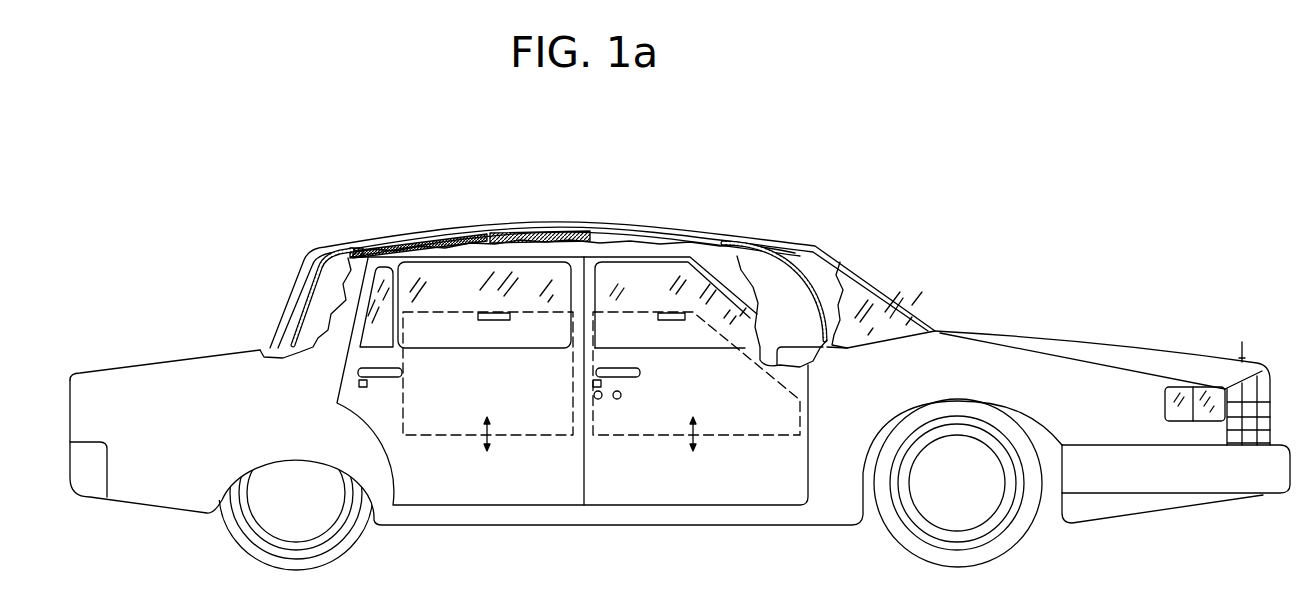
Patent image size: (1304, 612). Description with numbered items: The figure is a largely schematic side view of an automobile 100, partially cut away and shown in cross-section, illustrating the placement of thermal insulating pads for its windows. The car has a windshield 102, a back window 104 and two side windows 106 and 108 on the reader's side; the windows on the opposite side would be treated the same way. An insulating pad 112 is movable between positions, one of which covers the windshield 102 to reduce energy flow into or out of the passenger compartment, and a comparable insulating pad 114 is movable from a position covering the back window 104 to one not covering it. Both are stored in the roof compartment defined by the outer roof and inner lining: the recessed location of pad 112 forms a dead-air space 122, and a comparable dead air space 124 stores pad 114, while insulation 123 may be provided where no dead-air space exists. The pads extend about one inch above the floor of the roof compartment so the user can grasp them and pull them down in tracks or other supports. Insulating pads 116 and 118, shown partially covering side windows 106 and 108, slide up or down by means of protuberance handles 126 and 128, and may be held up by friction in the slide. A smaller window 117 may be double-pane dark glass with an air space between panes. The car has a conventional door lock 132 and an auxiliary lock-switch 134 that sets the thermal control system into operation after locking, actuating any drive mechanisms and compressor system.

The automobile 100 is at (1027, 340).
The windshield 102 is at (865, 280).
The back window 104 is at (287, 298).
The side window 106 is at (672, 305).
The side window 108 is at (484, 305).
The insulating pad 112 is at (767, 243).
The insulating pad 114 is at (318, 278).
The insulating pad 116 is at (488, 381).
The smaller window 117 is at (375, 332).
The insulating pad 118 is at (696, 381).
The recessed location (dead-air space) 122 is at (695, 243).
The insulation 123 is at (543, 228).
The dead air space 124 is at (402, 247).
The handle 126 is at (493, 315).
The handle 128 is at (675, 315).
The door lock 132 is at (600, 400).
The auxiliary lock-switch 134 is at (620, 399).